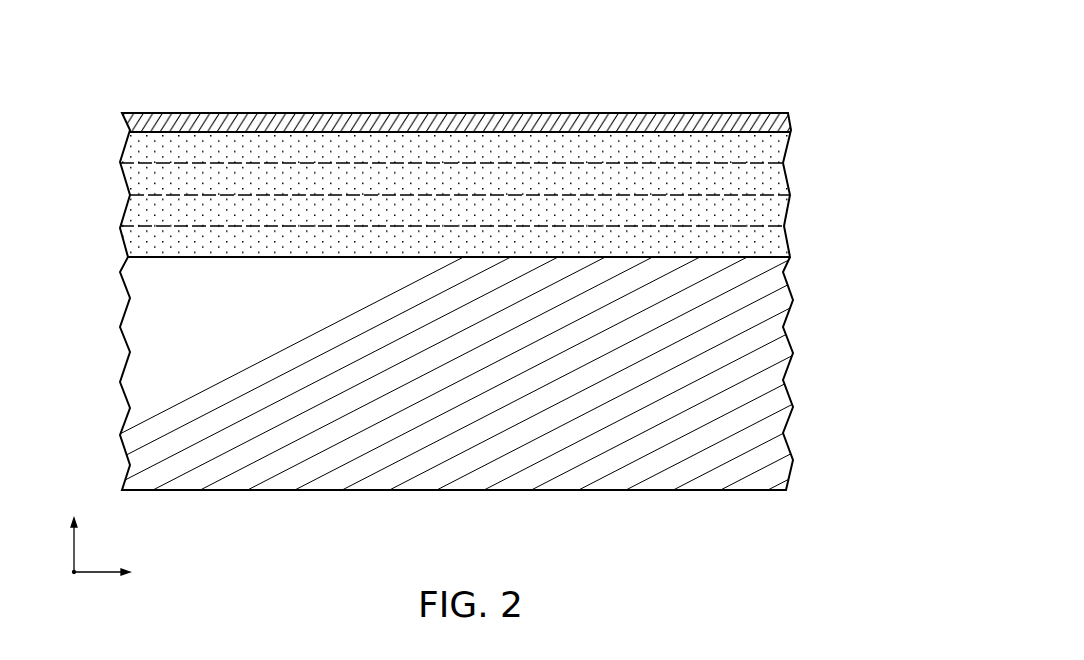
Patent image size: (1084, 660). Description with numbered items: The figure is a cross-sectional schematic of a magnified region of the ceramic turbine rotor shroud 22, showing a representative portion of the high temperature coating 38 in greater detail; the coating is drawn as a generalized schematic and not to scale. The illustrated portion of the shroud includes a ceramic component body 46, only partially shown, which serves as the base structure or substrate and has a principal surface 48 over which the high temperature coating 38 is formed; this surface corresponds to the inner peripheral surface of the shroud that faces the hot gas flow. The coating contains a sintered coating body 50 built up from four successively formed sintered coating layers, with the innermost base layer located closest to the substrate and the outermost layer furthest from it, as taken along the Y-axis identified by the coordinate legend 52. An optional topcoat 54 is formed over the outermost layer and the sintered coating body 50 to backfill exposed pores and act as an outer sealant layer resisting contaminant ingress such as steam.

The turbine rotor shroud 22 is at (547, 245).
The high temperature coating 38 is at (502, 156).
The ceramic component body 46 is at (430, 396).
The principal surface 48 is at (755, 258).
The sintered coating body 50 is at (541, 187).
The coordinate legend 52 is at (76, 548).
The topcoat 54 is at (456, 111).